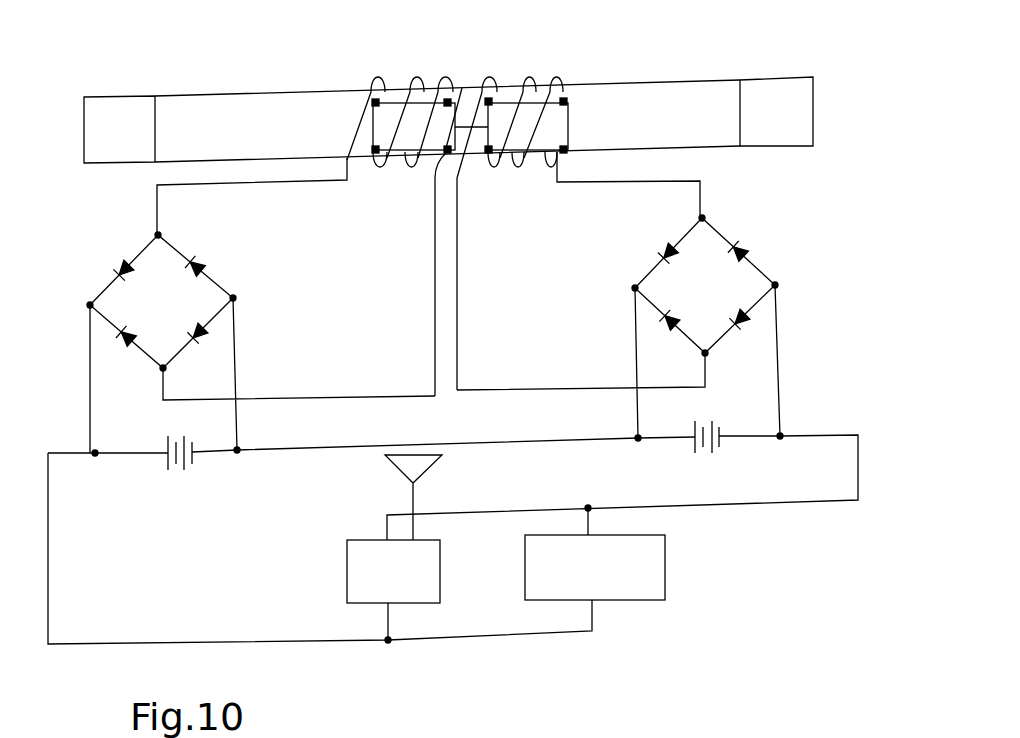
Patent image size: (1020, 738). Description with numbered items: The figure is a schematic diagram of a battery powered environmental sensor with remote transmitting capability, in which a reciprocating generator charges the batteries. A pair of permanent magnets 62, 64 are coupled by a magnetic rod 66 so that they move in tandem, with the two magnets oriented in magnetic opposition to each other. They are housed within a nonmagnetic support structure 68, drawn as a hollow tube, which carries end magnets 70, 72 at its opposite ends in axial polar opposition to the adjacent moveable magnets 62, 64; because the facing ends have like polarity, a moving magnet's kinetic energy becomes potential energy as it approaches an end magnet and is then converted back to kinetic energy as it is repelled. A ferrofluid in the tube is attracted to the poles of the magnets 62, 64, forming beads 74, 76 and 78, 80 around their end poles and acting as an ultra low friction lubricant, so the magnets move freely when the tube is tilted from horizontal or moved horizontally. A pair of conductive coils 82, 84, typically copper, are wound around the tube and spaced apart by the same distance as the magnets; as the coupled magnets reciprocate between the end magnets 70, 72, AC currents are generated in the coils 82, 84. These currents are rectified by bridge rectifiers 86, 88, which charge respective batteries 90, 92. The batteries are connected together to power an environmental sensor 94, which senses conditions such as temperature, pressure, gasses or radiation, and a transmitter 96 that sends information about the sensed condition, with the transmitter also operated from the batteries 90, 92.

The permanent magnet 62 is at (433, 98).
The permanent magnet 64 is at (548, 90).
The magnetic rod 66 is at (472, 84).
The nonmagnetic support structure 68 is at (270, 93).
The end magnet 70 is at (120, 103).
The end magnet 72 is at (771, 78).
The ferrofluid bead 74 is at (334, 93).
The ferrofluid bead 76 is at (460, 77).
The ferrofluid bead 78 is at (511, 90).
The ferrofluid bead 80 is at (569, 99).
The conductive coil 82 is at (376, 100).
The conductive coil 84 is at (519, 170).
The bridge rectifier 86 is at (180, 315).
The bridge rectifier 88 is at (683, 303).
The battery 90 is at (160, 437).
The battery 92 is at (720, 412).
The environmental sensor 94 is at (666, 560).
The transmitter 96 is at (441, 578).